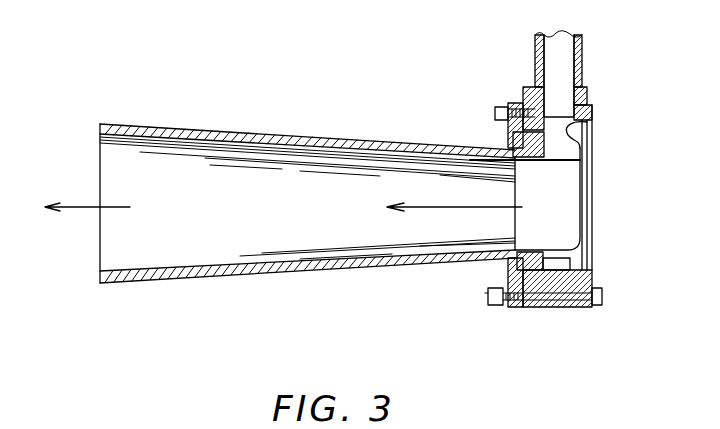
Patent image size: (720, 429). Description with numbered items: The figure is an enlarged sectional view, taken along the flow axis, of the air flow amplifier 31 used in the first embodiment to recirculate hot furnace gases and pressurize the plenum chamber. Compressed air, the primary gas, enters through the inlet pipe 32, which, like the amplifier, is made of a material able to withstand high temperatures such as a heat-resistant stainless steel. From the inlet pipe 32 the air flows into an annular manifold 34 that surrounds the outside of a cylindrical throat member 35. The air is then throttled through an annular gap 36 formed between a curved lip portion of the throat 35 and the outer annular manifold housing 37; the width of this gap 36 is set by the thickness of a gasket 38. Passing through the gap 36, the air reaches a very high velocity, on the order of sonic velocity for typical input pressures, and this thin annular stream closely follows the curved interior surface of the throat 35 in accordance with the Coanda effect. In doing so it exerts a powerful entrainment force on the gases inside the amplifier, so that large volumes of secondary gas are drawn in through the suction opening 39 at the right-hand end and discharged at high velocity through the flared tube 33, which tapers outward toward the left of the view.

The air flow amplifier 31 is at (333, 279).
The inlet pipe 32 is at (535, 50).
The flared tube 33 is at (246, 278).
The annular manifold 34 is at (507, 127).
The cylindrical throat member 35 is at (546, 163).
The annular gap 36 is at (572, 127).
The outer annular manifold housing 37 is at (593, 270).
The gasket 38 is at (503, 271).
The suction opening 39 is at (593, 169).